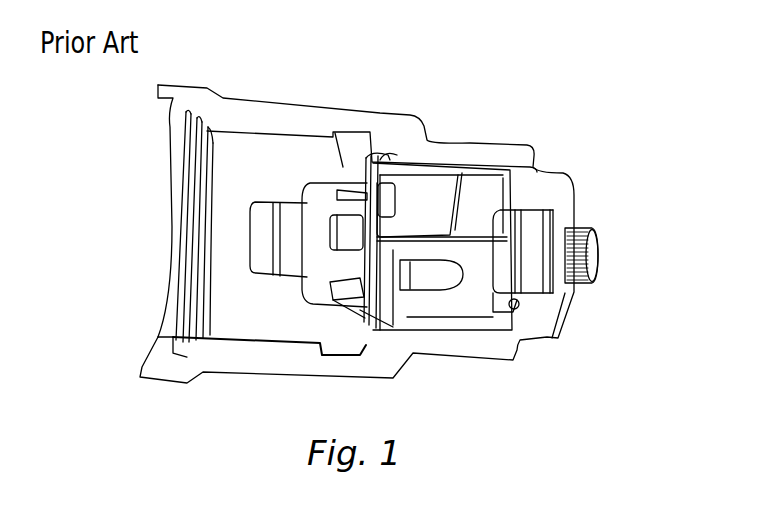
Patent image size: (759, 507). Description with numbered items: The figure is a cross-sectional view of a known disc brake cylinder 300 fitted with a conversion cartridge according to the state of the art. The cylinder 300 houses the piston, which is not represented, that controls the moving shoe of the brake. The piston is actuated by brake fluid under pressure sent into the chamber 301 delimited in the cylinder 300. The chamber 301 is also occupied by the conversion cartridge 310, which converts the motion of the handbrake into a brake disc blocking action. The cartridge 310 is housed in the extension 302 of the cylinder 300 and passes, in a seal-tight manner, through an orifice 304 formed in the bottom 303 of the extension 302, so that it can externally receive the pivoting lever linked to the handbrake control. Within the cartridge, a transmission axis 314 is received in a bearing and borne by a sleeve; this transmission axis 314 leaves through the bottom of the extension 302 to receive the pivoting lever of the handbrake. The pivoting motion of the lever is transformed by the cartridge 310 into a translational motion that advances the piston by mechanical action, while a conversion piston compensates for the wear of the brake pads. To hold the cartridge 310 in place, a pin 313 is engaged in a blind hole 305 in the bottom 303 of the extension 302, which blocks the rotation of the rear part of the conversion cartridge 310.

The cylinder 300 is at (230, 83).
The chamber 301 is at (258, 168).
The extension 302 is at (460, 157).
The conversion cartridge 310 is at (447, 195).
The bottom 303 is at (543, 312).
The orifice 304 is at (540, 208).
The transmission axis 314 is at (565, 240).
The blind hole 305 is at (519, 308).
The pin 313 is at (507, 314).